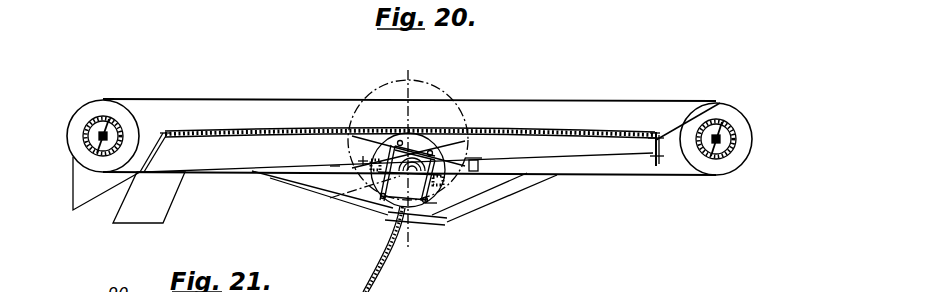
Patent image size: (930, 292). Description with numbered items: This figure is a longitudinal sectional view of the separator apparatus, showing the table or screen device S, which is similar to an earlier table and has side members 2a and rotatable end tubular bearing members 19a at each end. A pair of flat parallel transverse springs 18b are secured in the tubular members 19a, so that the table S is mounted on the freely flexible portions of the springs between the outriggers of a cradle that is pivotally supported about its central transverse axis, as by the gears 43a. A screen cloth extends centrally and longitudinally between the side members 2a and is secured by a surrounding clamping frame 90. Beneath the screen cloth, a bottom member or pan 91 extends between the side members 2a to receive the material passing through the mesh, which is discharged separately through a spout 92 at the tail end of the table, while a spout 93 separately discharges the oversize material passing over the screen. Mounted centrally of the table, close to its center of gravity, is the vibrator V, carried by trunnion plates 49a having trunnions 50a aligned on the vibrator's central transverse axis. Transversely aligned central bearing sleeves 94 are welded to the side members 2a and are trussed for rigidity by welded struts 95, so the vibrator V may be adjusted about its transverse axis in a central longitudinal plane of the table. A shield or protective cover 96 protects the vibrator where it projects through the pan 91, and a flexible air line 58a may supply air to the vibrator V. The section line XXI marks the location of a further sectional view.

The side members 2a is at (568, 113).
The flat parallel transverse springs 18b is at (97, 132).
The rotatable end tubular bearing members 19a is at (87, 143).
The table or screen device S is at (328, 91).
The clamping frame 90 is at (167, 132).
The spout 92 is at (149, 197).
The spout 93 is at (92, 183).
The gears 43a is at (490, 85).
The section line XXI- XXI is at (432, 68).
The shield or protective cover 96 is at (383, 137).
The central bearing sleeves 94 is at (518, 159).
The bottom member or pan 91 is at (330, 166).
The trunnions 50a is at (330, 215).
The welded struts 95 is at (478, 198).
The vibrator V is at (365, 222).
The trunnion plates 49a is at (433, 196).
The flexible air line 58a is at (375, 283).